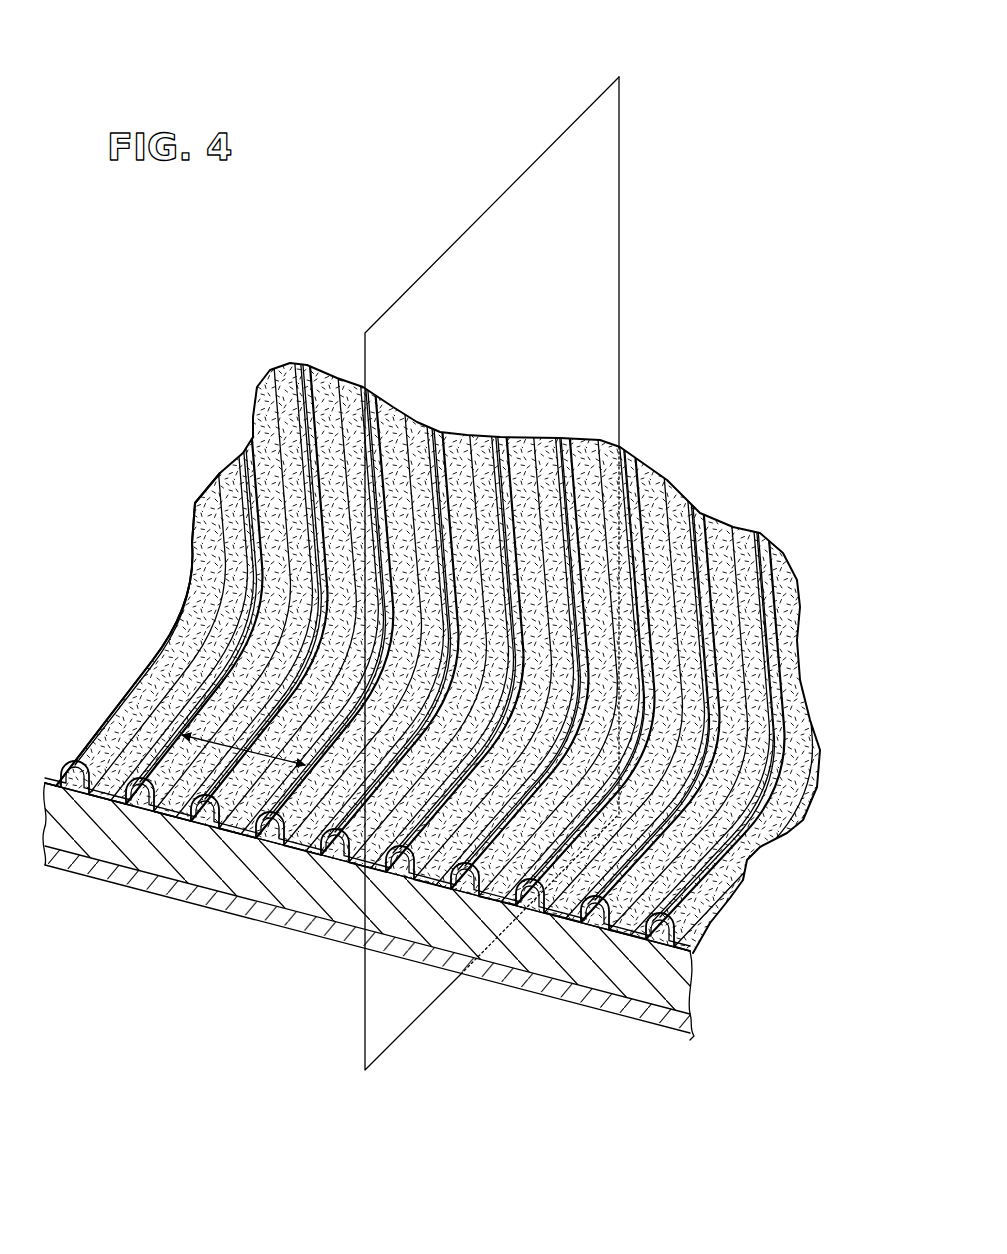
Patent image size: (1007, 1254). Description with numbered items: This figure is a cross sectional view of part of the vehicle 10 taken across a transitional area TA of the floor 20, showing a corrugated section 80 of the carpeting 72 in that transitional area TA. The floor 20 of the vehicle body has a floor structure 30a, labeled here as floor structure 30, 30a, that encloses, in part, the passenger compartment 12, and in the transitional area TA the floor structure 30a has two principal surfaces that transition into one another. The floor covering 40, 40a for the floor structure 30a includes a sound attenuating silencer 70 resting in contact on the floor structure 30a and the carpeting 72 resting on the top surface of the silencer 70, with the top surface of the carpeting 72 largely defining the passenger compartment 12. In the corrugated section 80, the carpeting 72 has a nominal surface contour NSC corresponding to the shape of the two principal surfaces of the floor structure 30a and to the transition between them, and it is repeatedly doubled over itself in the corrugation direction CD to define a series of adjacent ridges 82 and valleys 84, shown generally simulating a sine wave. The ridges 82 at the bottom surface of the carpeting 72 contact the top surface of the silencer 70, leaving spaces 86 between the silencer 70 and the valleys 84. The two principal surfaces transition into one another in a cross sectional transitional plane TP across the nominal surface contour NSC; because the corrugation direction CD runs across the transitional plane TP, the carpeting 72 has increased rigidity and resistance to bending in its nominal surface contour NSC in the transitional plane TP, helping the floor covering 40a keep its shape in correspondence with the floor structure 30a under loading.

The vehicle 10 is at (685, 403).
The floor 20 is at (737, 443).
The passenger compartment 12 is at (742, 540).
The corrugated section 80 is at (203, 535).
The ridges 82 is at (247, 663).
The valleys 84 is at (240, 717).
The spaces 86 is at (135, 810).
The carpeting 72 is at (713, 923).
The silencer 70 is at (768, 935).
The forming belt 40 is at (454, 898).
The floor covering 40a is at (454, 898).
The substrate 30 is at (454, 945).
The floor structure 30a is at (692, 1032).
The transitional plane TP is at (380, 317).
The transitional area TA is at (306, 669).
The corrugation direction CD is at (207, 733).
The nominal surface contour NSC is at (112, 742).